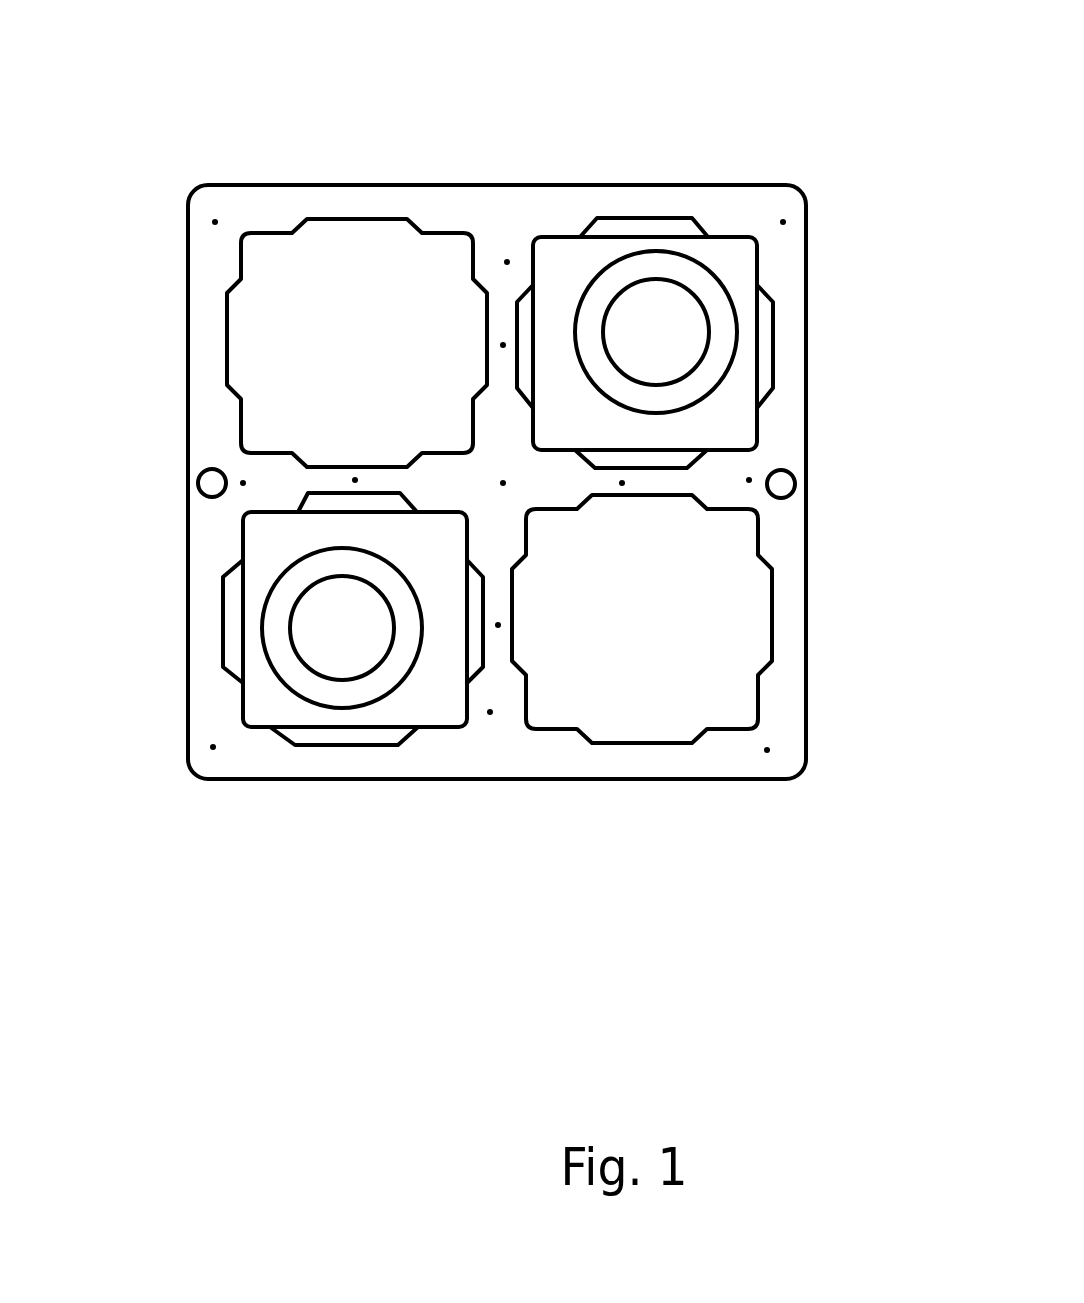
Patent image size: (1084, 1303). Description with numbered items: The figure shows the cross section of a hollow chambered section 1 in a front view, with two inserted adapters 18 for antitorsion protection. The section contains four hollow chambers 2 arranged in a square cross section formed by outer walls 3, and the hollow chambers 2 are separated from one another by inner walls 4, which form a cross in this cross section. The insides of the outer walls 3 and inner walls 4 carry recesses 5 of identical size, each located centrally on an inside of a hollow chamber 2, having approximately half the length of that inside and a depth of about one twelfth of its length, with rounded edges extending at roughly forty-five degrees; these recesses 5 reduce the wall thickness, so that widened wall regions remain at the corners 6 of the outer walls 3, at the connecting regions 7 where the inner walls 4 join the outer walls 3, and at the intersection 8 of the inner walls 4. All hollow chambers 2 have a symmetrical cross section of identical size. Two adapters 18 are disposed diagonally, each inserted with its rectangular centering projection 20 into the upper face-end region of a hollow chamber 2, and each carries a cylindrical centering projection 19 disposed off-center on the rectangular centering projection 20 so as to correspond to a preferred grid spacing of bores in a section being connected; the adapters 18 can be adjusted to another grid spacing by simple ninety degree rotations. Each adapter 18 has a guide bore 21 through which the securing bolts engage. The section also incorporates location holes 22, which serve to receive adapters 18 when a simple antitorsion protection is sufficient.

The hollow chambered section 1 is at (487, 180).
The hollow chamber 2 is at (337, 310).
The outer wall 3 is at (598, 184).
The inner wall 4 is at (503, 345).
The recess 5 is at (483, 385).
The corner 6 is at (215, 222).
The connecting region 7 is at (507, 262).
The intersection 8 is at (503, 483).
The adapter 18 is at (708, 243).
The cylindrical centering projection 19 is at (713, 300).
The rectangular centering projection 20 is at (430, 703).
The guide bore 21 is at (687, 323).
The location hole 22 is at (208, 487).